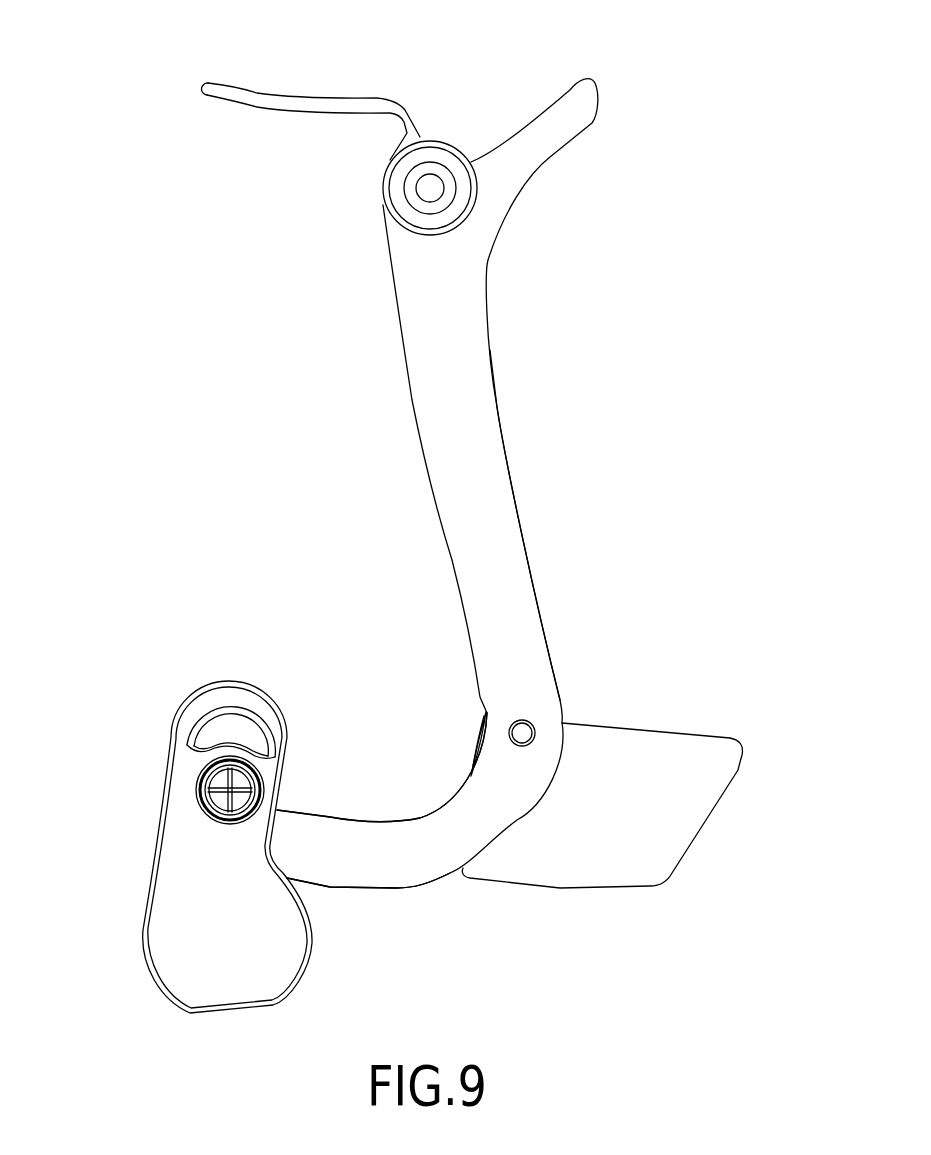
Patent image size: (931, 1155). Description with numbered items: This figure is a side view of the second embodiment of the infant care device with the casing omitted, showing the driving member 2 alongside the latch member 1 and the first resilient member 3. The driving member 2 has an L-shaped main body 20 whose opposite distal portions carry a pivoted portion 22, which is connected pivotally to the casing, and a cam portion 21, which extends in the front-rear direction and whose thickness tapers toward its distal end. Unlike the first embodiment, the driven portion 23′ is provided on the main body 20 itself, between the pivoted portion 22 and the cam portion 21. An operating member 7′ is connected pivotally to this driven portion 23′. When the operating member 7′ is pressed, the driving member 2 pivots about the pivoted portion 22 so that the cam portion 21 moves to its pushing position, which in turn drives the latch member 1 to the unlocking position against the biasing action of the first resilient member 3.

The latch member 1 is at (188, 903).
The driving member 2 is at (497, 408).
The first resilient member 3 is at (200, 783).
The L-shaped main body 20 is at (518, 525).
The cam portion 21 is at (273, 837).
The pivoted portion 22 is at (430, 172).
The driven portion 23′ is at (545, 715).
The operating member 7′ is at (662, 813).